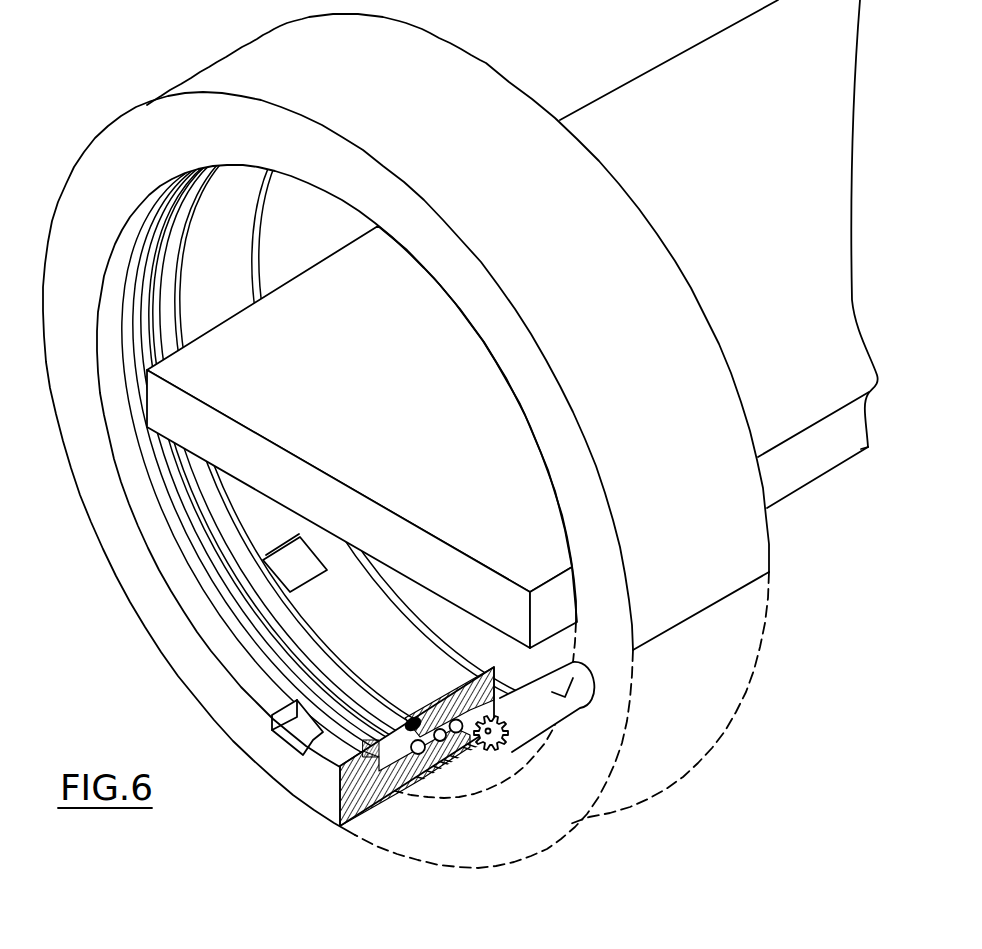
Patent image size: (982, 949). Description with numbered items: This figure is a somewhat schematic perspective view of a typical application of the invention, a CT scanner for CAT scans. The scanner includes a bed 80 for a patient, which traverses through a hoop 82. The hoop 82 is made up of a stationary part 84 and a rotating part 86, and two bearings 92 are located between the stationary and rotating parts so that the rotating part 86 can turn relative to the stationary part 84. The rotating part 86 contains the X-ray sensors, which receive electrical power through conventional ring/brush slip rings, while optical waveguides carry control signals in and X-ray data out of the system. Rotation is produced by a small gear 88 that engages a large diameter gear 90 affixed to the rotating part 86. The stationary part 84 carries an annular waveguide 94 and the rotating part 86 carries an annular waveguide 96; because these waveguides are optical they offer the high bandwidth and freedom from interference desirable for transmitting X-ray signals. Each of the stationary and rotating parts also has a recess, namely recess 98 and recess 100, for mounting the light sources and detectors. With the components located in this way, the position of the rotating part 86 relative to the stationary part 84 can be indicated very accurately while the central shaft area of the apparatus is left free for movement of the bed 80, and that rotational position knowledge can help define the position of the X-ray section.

The bed 80 is at (743, 211).
The hoop 82 is at (537, 214).
The stationary part 84 is at (272, 757).
The rotating part 86 is at (400, 655).
The small gear 88 is at (517, 757).
The large diameter gear 90 is at (485, 742).
The bearings 92 is at (413, 760).
The annular waveguide 94 is at (392, 710).
The annular waveguide 96 is at (340, 765).
The recess 98 is at (293, 730).
The recess 100 is at (287, 570).